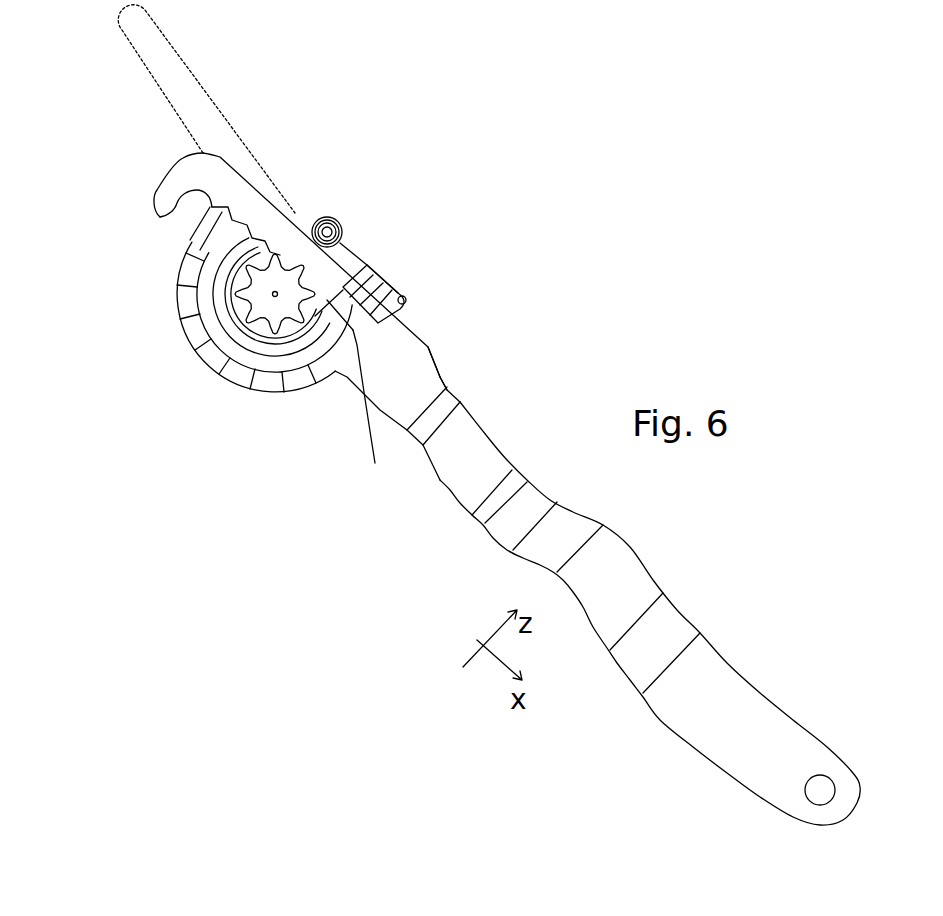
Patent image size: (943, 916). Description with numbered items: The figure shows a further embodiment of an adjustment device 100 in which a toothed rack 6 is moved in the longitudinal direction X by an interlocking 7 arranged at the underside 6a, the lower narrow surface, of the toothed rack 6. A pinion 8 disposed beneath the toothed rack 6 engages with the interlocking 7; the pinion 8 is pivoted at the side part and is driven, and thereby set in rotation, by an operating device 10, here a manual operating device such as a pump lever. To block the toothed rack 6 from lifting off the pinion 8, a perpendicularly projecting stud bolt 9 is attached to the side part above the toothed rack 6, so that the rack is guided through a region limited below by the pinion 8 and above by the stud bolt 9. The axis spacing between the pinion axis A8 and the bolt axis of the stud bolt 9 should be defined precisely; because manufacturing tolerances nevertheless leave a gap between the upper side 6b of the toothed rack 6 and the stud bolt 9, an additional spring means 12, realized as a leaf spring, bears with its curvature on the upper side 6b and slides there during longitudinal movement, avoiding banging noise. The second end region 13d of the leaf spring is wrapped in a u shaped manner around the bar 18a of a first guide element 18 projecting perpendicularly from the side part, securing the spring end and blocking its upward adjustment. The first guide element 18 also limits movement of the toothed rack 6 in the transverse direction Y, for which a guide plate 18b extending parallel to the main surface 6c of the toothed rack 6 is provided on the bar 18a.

The adjustment device 100 is at (428, 136).
The toothed rack 6 is at (497, 447).
The underside 6a is at (341, 386).
The upper side 6b is at (433, 332).
The main surface 6c is at (428, 366).
The interlocking 7 is at (212, 207).
The pinion 8 is at (253, 332).
The pinion axis A8 is at (273, 296).
The stud bolt 9 is at (327, 216).
The operating device 10 is at (204, 93).
The spring means 12 is at (341, 243).
The second end region 13d is at (414, 286).
The first guide element 18 is at (431, 288).
The bar 18a is at (396, 278).
The guide plate 18b is at (379, 420).